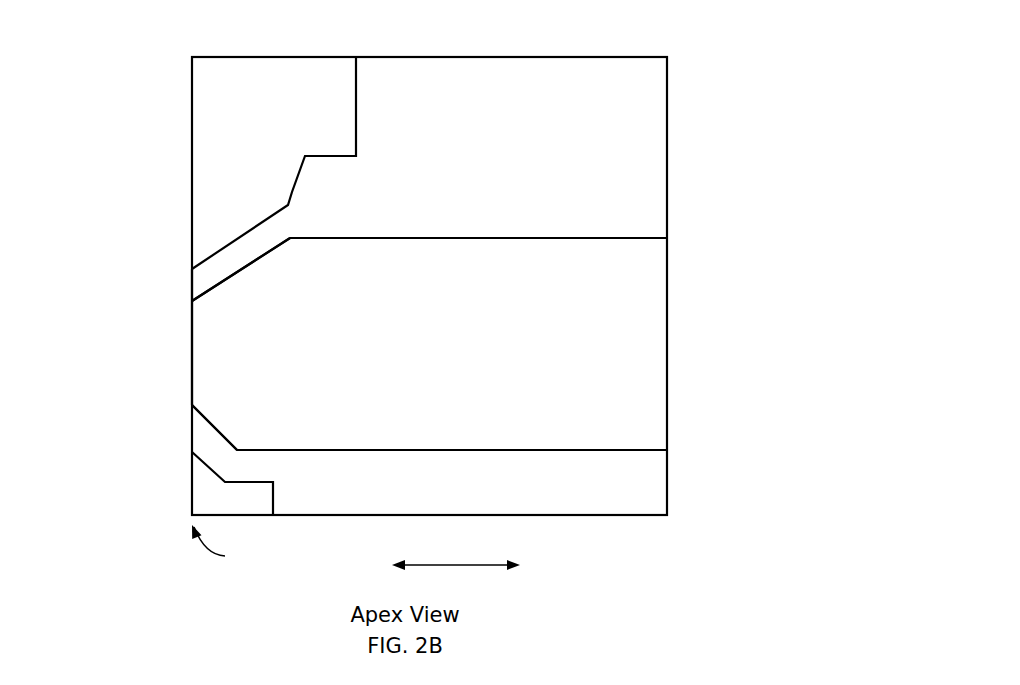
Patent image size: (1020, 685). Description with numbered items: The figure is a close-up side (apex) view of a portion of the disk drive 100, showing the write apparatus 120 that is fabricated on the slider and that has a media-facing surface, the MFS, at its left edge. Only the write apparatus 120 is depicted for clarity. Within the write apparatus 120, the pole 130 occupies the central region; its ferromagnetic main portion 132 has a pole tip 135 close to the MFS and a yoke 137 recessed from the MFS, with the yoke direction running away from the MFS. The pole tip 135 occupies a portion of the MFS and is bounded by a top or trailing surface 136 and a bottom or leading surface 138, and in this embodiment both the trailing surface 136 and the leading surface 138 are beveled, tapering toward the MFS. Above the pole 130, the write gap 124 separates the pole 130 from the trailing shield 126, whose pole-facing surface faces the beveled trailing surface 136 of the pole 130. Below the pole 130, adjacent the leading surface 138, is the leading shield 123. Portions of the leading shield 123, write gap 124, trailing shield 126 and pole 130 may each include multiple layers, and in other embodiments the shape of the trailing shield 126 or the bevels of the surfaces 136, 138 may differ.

The disk drive 100 is at (450, 38).
The write apparatus 120 is at (429, 286).
The leading shield 123 is at (232, 483).
The write gap 124 is at (188, 281).
The trailing shield 126 is at (274, 163).
The pole 130 is at (173, 337).
The main portion 132 is at (429, 344).
The pole tip 135 is at (277, 462).
The trailing surface 136 is at (224, 314).
The yoke 137 is at (472, 219).
The leading surface 138 is at (212, 432).